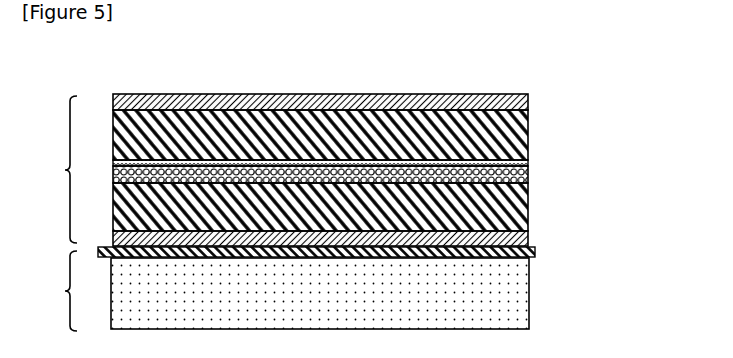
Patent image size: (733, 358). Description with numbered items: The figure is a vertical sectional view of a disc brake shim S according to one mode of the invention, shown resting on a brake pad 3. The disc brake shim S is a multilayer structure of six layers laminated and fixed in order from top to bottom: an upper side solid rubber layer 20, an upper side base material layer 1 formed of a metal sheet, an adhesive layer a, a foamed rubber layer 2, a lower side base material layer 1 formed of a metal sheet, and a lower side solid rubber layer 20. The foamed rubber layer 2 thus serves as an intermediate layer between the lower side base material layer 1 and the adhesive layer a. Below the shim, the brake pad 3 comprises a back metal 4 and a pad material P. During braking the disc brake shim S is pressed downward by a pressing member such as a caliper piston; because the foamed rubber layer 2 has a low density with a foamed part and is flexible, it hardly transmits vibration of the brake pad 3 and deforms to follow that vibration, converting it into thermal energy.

The solid rubber layer 20 is at (528, 98).
The base material layer 1 is at (528, 130).
The adhesive layer a is at (528, 162).
The foamed rubber layer 2 is at (528, 172).
The back metal 4 is at (535, 255).
The brake pad 3 is at (500, 288).
The disc brake shim S is at (57, 169).
The pad material P is at (57, 291).